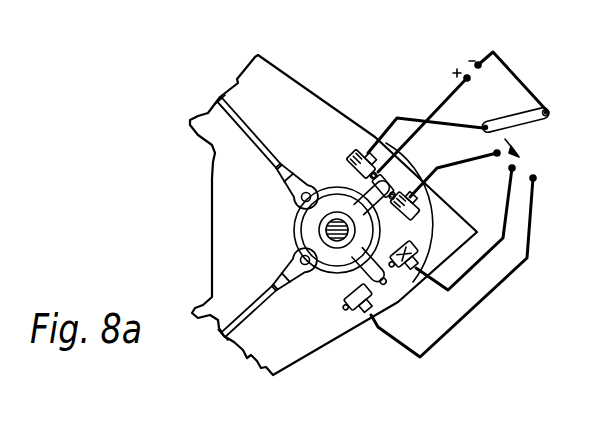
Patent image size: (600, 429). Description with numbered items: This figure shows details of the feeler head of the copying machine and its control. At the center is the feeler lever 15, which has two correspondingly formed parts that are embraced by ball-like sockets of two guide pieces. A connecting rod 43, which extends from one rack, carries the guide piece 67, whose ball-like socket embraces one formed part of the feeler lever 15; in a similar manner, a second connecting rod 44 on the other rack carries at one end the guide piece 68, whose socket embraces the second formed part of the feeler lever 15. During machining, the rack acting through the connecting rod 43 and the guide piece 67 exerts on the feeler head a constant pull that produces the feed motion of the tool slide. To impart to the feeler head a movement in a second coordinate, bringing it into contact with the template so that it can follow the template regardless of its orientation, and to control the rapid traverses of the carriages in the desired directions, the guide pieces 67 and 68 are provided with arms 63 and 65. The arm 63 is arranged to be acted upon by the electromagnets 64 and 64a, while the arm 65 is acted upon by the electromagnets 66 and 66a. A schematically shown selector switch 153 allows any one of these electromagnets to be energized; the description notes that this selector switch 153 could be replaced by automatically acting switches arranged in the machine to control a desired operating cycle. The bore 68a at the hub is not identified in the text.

The feeler lever 15 is at (337, 226).
The connecting rod 43 is at (264, 139).
The connecting rod 44 is at (262, 290).
The arm 63 is at (392, 181).
The electromagnet 64 is at (418, 217).
The electromagnet 64a is at (357, 156).
The arm 65 is at (386, 281).
The electromagnet 66 is at (423, 274).
The electromagnet 66a is at (349, 308).
The guide piece 67 is at (298, 211).
The guide piece 68 is at (318, 266).
The shaft bore 68a is at (326, 233).
The selector switch 153 is at (543, 117).